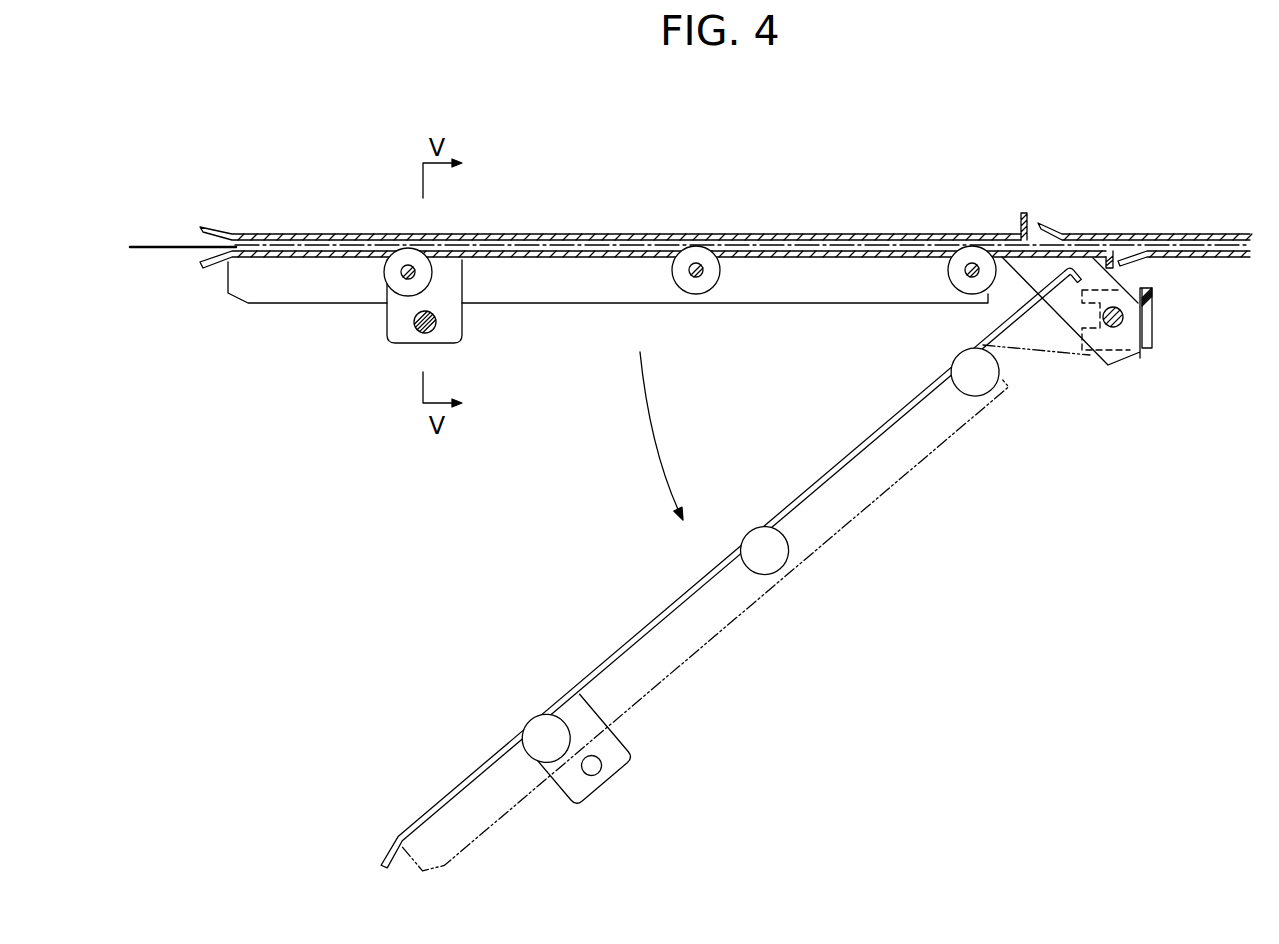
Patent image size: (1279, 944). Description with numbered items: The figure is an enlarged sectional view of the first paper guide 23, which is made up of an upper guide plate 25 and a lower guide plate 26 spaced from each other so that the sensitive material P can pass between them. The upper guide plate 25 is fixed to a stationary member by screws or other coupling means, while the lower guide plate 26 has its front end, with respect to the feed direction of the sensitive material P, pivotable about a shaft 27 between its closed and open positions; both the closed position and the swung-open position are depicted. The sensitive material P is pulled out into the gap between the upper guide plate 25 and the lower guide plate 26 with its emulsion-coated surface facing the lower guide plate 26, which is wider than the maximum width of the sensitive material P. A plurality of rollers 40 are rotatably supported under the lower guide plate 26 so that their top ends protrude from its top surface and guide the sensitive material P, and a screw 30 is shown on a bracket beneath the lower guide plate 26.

The sensitive material P is at (158, 244).
The first paper guide 23 is at (726, 200).
The upper guide plate 25 is at (800, 233).
The lower guide plate 26 is at (725, 586).
The shaft 27 is at (1124, 318).
The screw 30 is at (415, 334).
The rollers 40 is at (393, 280).